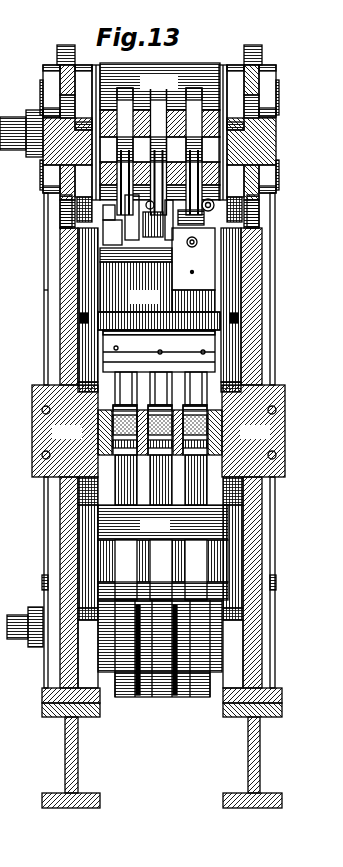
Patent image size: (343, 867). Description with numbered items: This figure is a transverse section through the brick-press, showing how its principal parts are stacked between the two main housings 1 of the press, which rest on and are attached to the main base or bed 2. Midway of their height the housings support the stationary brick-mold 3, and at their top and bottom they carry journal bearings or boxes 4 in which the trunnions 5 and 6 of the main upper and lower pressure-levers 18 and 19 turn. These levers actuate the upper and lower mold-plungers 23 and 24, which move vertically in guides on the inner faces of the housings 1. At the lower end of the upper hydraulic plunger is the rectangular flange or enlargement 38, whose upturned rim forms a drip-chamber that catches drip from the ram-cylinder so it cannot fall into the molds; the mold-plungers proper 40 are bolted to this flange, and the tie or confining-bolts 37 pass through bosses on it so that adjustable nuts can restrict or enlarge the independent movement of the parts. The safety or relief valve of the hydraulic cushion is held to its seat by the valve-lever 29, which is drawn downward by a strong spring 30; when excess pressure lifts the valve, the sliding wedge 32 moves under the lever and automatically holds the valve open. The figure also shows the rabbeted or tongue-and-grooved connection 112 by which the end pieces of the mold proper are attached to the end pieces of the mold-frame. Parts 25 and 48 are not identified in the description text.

The main housings 1 is at (157, 455).
The main base 2 is at (162, 762).
The stationary brick-mold 3 is at (159, 450).
The journal bearings 4 is at (115, 570).
The trunnion 5 is at (21, 129).
The trunnion 6 is at (21, 633).
The upper pressure-lever 18 is at (160, 139).
The lower pressure-lever 19 is at (160, 661).
The upper mold-plunger 23 is at (257, 318).
The lower mold-plunger 24 is at (163, 522).
The cylinder 25 is at (157, 287).
The valve-lever 29 is at (250, 212).
The spring 30 is at (112, 232).
The wedge 32 is at (157, 259).
The confining-bolts 37 is at (139, 209).
The flange or enlargement 38 is at (159, 351).
The mold-plungers proper 40 is at (161, 388).
The rod 48 is at (24, 296).
The tongue-and-grooved connection 112 is at (92, 433).